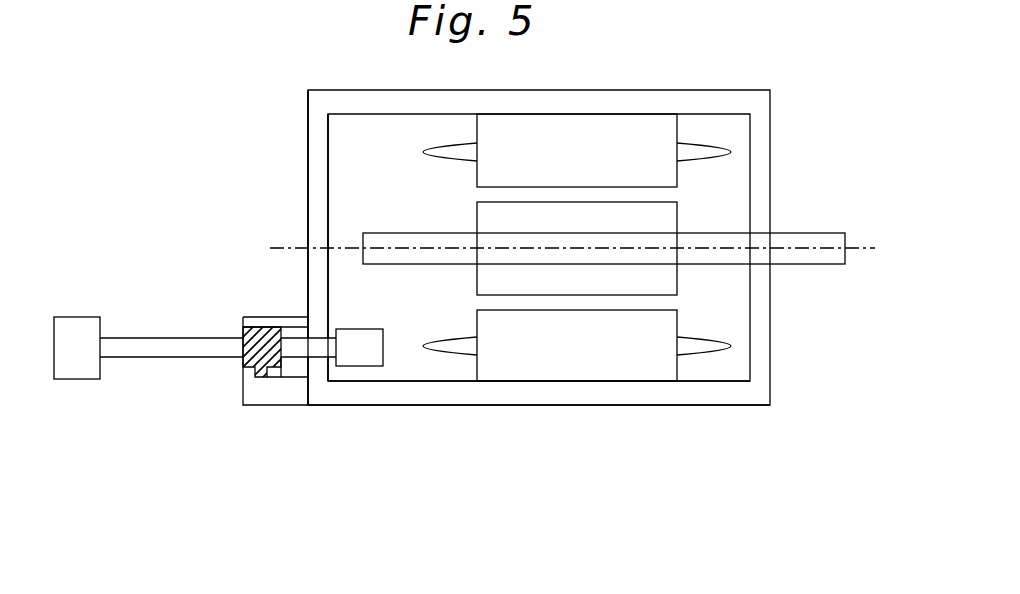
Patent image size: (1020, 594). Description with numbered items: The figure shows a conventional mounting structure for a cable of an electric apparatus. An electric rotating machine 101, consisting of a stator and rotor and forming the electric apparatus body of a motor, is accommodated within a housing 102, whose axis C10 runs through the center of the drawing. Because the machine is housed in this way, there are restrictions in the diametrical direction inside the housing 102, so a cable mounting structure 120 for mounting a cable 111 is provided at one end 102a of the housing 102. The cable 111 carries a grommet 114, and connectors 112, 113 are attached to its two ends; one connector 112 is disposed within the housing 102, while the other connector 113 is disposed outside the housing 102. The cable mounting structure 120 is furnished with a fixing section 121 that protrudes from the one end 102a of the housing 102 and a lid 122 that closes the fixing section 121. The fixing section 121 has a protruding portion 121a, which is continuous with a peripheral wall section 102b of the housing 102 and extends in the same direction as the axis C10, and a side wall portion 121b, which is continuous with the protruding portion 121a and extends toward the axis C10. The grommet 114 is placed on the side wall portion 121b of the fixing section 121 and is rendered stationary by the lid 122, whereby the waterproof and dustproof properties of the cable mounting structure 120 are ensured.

The electric rotating machine 101 is at (730, 197).
The housing 102 is at (773, 372).
The one end of the housing 102a is at (318, 172).
The peripheral wall section 102b is at (555, 397).
The axis of the housing C10 is at (858, 251).
The cable mounting structure 120 is at (232, 383).
The cable 111 is at (140, 348).
The connector 112 is at (372, 357).
The connector 113 is at (76, 371).
The grommet 114 is at (243, 338).
The fixing section 121 is at (255, 424).
The protruding portion 121a is at (293, 418).
The side wall portion 121b is at (248, 375).
The lid 122 is at (260, 322).